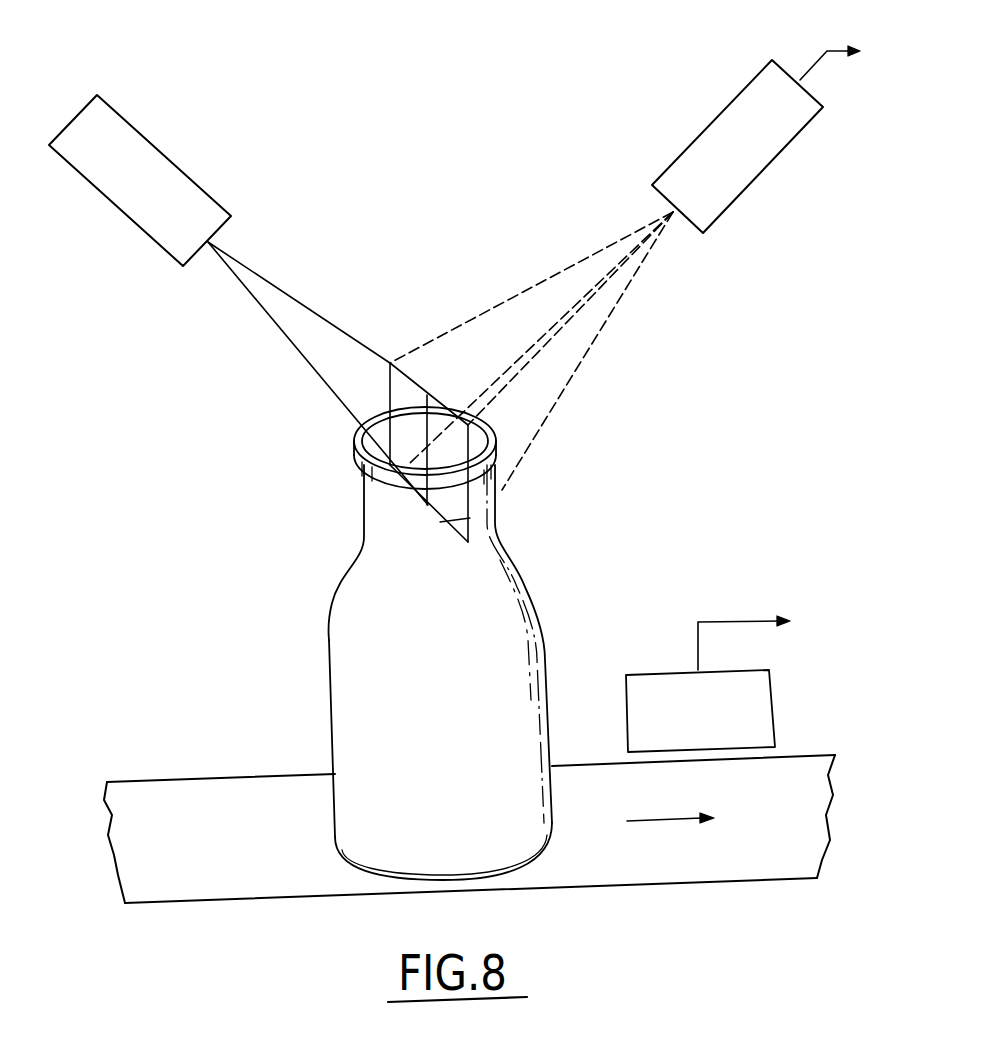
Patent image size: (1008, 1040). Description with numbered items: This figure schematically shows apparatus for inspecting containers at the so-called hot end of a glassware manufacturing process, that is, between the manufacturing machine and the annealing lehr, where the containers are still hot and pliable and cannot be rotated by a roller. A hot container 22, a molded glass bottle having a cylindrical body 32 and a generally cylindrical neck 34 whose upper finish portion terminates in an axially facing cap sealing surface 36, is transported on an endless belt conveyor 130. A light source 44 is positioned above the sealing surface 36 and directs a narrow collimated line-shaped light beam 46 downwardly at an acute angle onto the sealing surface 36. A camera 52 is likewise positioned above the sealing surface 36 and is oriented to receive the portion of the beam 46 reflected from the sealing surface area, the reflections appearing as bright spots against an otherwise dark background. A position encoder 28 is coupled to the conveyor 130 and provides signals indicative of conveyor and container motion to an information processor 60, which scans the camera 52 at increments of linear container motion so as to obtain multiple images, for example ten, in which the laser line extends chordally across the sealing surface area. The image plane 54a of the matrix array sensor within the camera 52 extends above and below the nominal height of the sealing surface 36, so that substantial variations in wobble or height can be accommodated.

The container 22 is at (547, 594).
The position encoder 28 is at (773, 690).
The cylindrical body 32 is at (337, 712).
The neck 34 is at (368, 501).
The sealing surface 36 is at (497, 445).
The light source 44 is at (180, 178).
The collimated light beam 46 is at (428, 425).
The camera 52 is at (708, 132).
The image plane 54a is at (458, 520).
The information processor 60 is at (798, 352).
The endless belt conveyor 130 is at (738, 860).